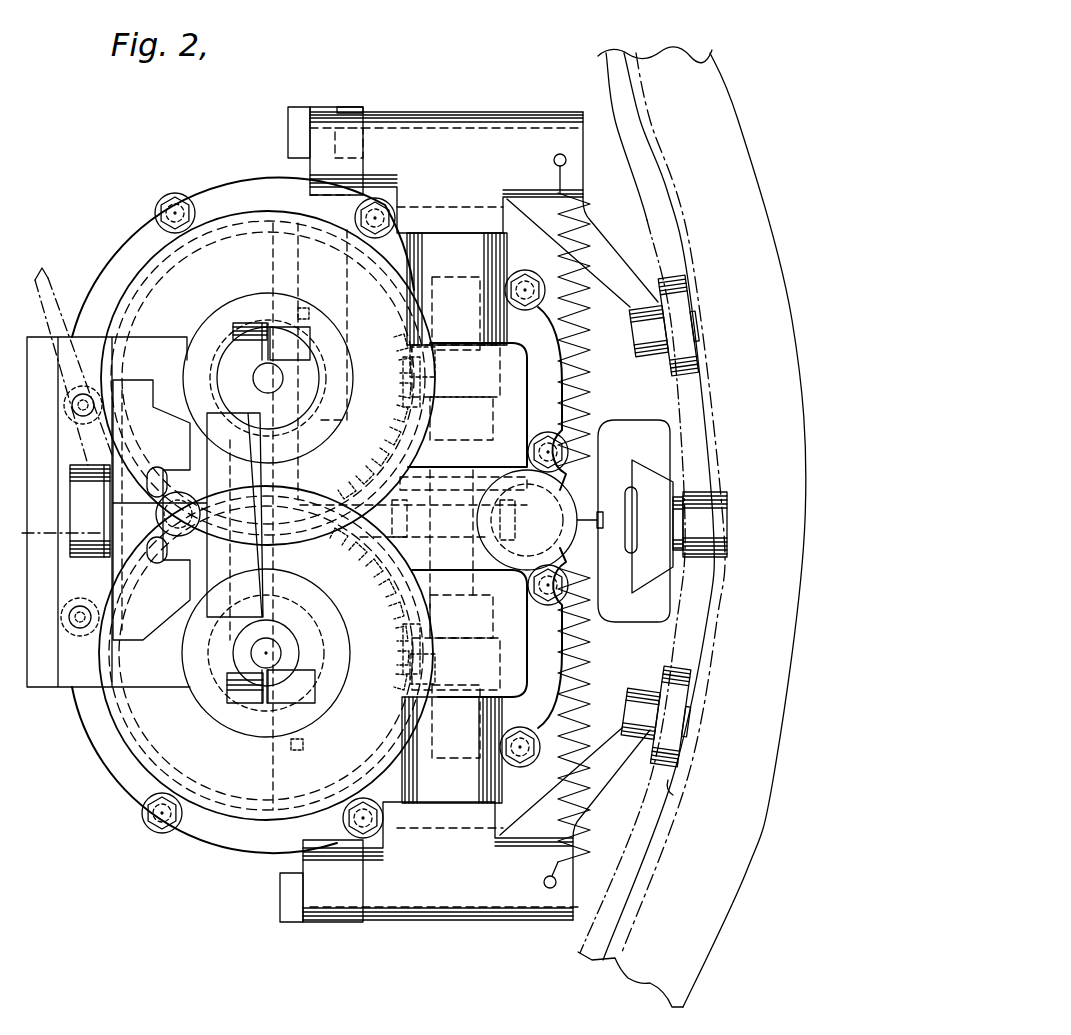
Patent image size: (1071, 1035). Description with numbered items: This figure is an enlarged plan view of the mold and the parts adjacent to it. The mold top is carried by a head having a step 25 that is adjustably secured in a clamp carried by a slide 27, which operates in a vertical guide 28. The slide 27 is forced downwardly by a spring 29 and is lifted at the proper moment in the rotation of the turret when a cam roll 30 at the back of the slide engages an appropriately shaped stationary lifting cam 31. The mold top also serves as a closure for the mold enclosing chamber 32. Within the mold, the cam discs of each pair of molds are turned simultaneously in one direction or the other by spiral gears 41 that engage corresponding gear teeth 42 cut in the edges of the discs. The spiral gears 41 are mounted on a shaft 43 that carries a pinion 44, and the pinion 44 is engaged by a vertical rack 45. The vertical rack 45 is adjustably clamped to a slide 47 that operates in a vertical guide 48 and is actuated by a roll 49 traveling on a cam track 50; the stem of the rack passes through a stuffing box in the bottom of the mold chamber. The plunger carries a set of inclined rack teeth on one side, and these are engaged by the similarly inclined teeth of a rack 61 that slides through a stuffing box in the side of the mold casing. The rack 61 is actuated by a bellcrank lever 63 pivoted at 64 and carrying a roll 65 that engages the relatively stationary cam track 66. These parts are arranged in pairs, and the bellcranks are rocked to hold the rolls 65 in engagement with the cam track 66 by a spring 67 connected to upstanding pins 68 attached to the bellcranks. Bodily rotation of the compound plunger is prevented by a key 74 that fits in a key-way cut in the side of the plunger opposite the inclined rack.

The step 25 is at (268, 645).
The slide 27 is at (187, 483).
The vertical guide 28 is at (163, 380).
The spring 29 is at (186, 523).
The cam roll 30 is at (90, 511).
The stationary lifting cam 31 is at (98, 390).
The mold enclosing chamber 32 is at (267, 515).
The spiral gears 41 is at (405, 381).
The gear teeth 42 is at (376, 460).
The shaft 43 is at (427, 481).
The pinion 44 is at (395, 514).
The vertical rack 45 is at (540, 520).
The slide 47 is at (664, 523).
The vertical guide 48 is at (635, 521).
The roll 49 is at (717, 518).
The cam track 50 is at (722, 582).
The rack 61 is at (304, 306).
The bellcrank lever 63 is at (365, 130).
The pivot 64 is at (472, 133).
The roll 65 is at (683, 309).
The cam track 66 is at (673, 796).
The spring 67 is at (584, 374).
The upstanding pins 68 is at (560, 153).
The key 74 is at (228, 380).